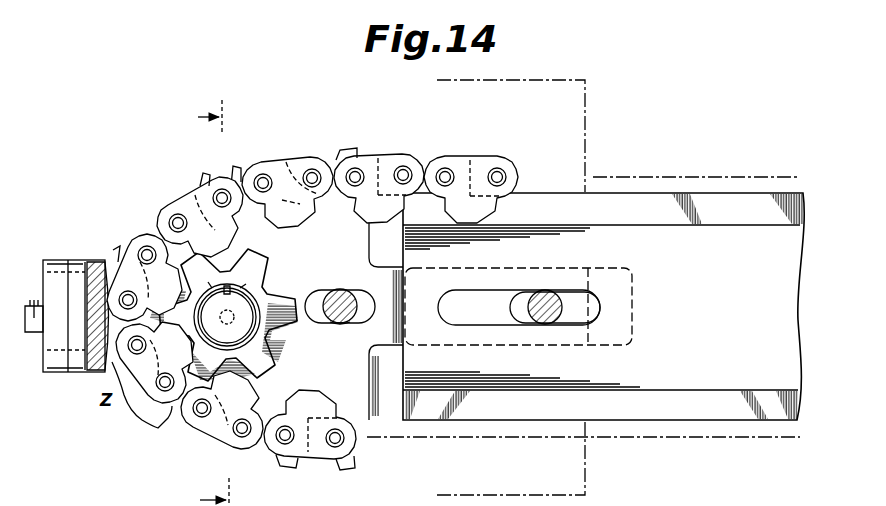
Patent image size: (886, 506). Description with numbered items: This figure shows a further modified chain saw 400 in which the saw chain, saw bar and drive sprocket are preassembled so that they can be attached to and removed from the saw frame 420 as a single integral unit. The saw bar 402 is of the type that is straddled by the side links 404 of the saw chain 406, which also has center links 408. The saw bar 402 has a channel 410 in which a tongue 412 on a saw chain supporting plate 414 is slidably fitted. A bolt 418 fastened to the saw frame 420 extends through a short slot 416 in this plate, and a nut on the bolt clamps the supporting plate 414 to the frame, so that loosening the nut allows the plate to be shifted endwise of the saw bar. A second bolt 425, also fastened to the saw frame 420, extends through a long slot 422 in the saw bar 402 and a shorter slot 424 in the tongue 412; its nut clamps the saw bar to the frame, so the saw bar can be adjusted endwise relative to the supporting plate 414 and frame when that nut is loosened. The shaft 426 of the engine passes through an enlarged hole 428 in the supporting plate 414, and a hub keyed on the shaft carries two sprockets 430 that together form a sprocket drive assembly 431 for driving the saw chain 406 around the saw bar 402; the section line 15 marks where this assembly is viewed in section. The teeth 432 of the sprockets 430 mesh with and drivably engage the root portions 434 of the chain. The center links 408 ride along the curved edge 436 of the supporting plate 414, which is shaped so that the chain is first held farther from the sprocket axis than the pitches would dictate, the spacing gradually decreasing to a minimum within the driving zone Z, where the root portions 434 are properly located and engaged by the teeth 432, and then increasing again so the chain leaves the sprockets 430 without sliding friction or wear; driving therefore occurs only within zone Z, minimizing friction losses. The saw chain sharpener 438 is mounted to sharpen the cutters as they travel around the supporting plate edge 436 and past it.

The section line 15 is at (223, 302).
The chain saw 400 is at (611, 156).
The saw bar 402 is at (603, 306).
The side links 404 is at (310, 156).
The saw chain 406 is at (516, 170).
The center links 408 is at (196, 182).
The channel 410 is at (436, 340).
The tongue 412 is at (376, 354).
The saw chain supporting plate 414 is at (282, 378).
The short slot 416 is at (352, 318).
The bolt 418 is at (352, 294).
The saw frame 420 is at (613, 477).
The long slot 422 is at (480, 292).
The shorter slot 424 is at (528, 318).
The second bolt 425 is at (552, 292).
The shaft 426 is at (258, 303).
The enlarged hole 428 is at (276, 346).
The sprockets 430 is at (270, 352).
The sprocket drive assembly 431 is at (231, 388).
The sprocket teeth 432 is at (262, 270).
The root portions 434 is at (362, 221).
The curved edge 436 is at (224, 160).
The saw chain sharpener 438 is at (58, 375).